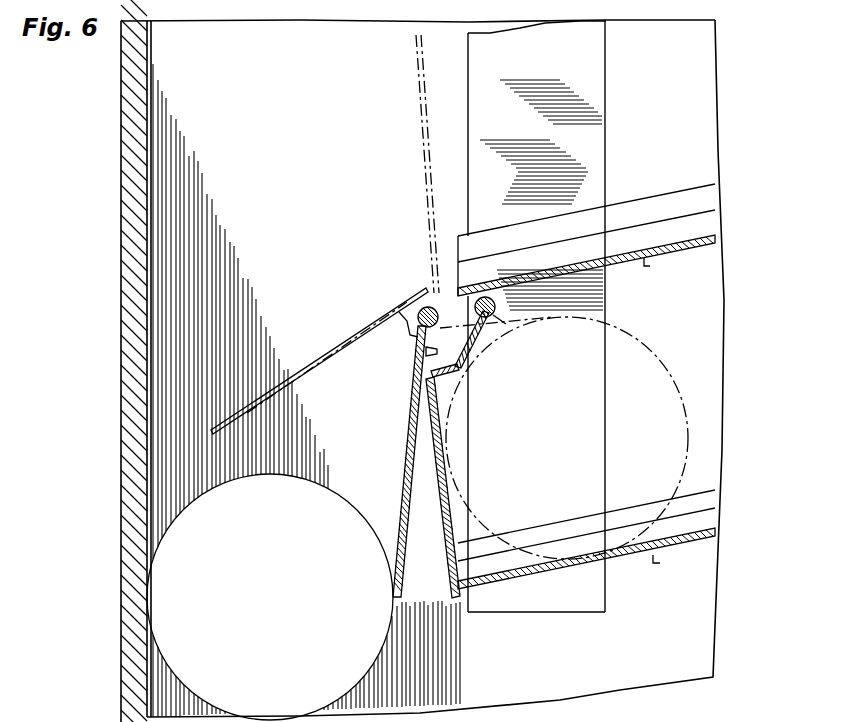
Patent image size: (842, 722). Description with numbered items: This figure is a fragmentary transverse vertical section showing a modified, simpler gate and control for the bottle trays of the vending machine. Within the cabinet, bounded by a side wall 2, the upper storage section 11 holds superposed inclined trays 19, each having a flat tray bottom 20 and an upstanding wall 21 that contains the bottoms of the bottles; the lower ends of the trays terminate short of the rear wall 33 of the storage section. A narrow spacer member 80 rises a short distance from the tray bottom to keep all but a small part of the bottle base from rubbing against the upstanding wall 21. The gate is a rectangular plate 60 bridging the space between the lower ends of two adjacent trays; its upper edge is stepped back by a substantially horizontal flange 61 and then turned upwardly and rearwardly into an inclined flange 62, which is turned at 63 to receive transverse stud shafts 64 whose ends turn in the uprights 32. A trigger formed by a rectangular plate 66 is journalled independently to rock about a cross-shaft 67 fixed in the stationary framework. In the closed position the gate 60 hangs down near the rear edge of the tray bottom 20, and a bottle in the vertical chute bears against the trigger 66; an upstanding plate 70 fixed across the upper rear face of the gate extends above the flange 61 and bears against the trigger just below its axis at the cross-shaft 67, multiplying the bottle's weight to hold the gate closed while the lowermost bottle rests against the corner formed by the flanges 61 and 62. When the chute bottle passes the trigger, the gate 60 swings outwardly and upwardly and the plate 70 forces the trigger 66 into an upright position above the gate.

The side wall 2 is at (306, 390).
The storage section 11 is at (435, 368).
The tray 19 is at (665, 416).
The tray bottom 20 is at (698, 243).
The upstanding wall 21 is at (700, 197).
The upright 32 is at (583, 68).
The rear wall 33 is at (120, 134).
The gate plate 60 is at (450, 518).
The horizontal flange 61 is at (447, 388).
The inclined flange 62 is at (474, 349).
The turned portion 63 is at (492, 298).
The stud shaft 64 is at (506, 324).
The trigger plate 66 is at (410, 441).
The cross-shaft 67 is at (421, 302).
The upstanding plate 70 is at (425, 352).
The spacer member 80 is at (700, 227).